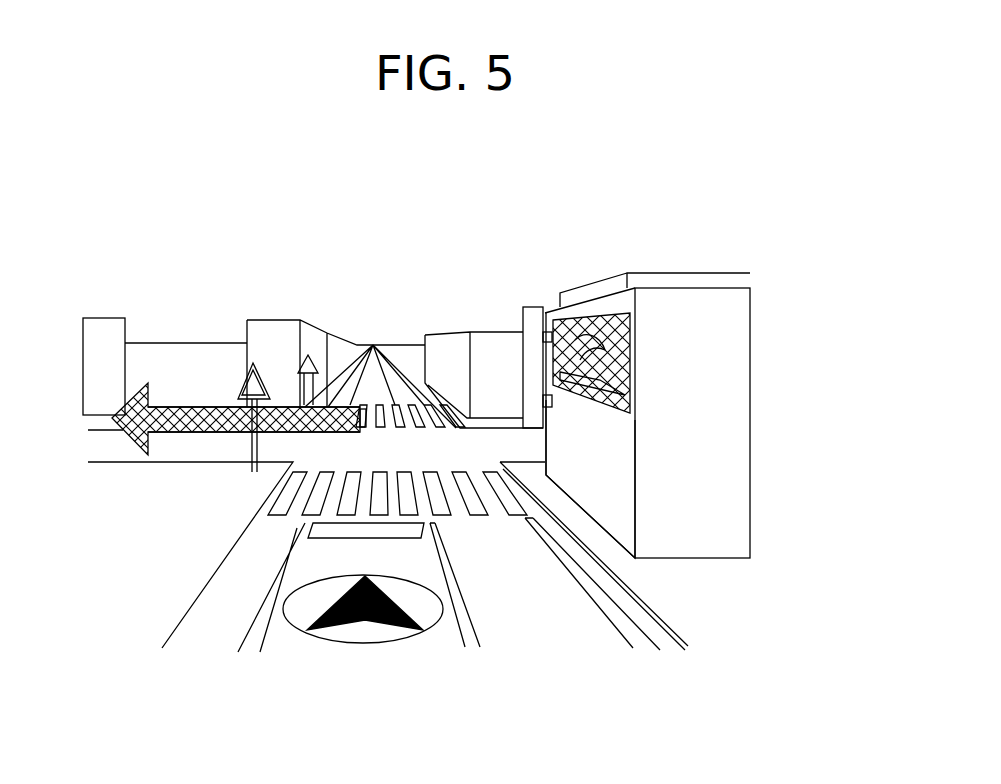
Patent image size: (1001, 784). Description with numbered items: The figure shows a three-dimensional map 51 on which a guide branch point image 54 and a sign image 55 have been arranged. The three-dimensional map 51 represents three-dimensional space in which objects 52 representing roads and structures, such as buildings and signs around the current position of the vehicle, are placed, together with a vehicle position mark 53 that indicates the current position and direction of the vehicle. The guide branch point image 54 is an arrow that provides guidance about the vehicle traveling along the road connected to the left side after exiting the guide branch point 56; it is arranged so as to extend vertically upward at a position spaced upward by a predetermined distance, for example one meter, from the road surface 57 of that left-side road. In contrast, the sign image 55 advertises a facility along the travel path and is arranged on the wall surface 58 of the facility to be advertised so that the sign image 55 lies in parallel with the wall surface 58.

The three-dimensional map 51 is at (498, 197).
The objects 52 is at (702, 550).
The vehicle position mark 53 is at (430, 615).
The guide branch point image 54 is at (183, 405).
The sign image 55 is at (598, 315).
The guide branch point 56 is at (398, 453).
The road surface 57 is at (230, 440).
The wall surface 58 is at (592, 415).